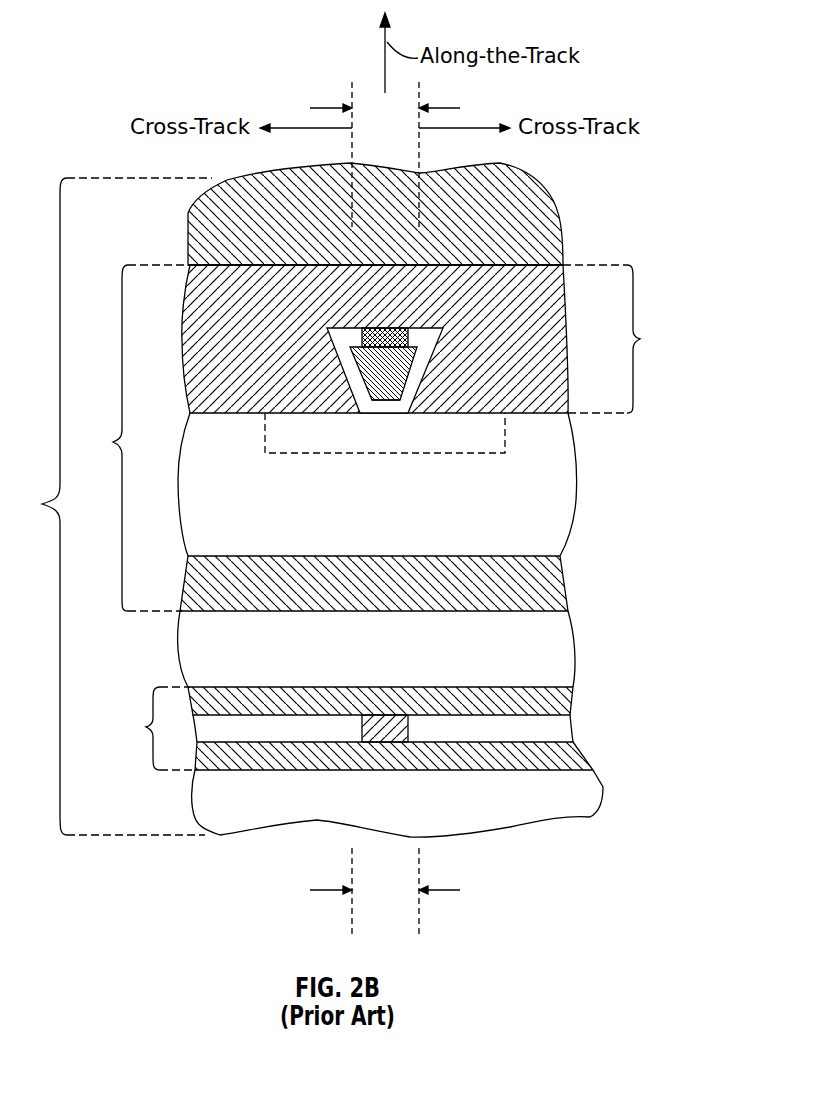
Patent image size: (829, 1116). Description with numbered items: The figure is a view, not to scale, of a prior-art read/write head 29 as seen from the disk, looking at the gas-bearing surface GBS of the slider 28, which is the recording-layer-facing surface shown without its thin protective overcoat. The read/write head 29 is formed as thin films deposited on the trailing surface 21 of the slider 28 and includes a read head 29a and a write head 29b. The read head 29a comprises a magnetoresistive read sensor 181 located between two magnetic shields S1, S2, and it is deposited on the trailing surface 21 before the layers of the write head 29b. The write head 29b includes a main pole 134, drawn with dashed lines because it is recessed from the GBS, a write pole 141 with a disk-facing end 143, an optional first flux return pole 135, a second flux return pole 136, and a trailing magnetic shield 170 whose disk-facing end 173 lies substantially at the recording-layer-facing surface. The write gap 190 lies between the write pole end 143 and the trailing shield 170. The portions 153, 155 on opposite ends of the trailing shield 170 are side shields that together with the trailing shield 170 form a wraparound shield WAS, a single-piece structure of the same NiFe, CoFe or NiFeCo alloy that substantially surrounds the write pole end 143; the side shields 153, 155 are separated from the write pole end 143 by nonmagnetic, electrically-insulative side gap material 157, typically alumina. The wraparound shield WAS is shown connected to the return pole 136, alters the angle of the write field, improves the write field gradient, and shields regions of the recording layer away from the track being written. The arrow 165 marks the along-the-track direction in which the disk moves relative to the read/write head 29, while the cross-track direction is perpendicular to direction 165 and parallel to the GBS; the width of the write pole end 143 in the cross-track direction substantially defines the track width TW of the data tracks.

The along-the-track direction 165 is at (387, 32).
The second flux return pole 136 is at (543, 200).
The trailing magnetic shield 170 is at (457, 265).
The disk-facing end of trailing shield 173 is at (522, 315).
The side shield 153 is at (537, 377).
The side shield 155 is at (215, 385).
The side gap material 157 is at (348, 368).
The write pole 141 is at (352, 382).
The write gap 190 is at (385, 330).
The disk-facing end of write pole 143 is at (372, 400).
The main pole 134 is at (470, 445).
The first flux return pole 135 is at (555, 567).
The slider 28 is at (573, 630).
The magnetic shield S2 is at (565, 695).
The magnetoresistive read sensor 181 is at (410, 725).
The magnetic shield S1 is at (575, 752).
The trailing surface of slider 21 is at (555, 775).
The read/write head 29 is at (113, 506).
The write head 29b is at (131, 438).
The read head 29a is at (151, 728).
The wraparound shield WAS is at (626, 339).
The gas-bearing surface GBS is at (270, 531).
The track width TW is at (385, 510).